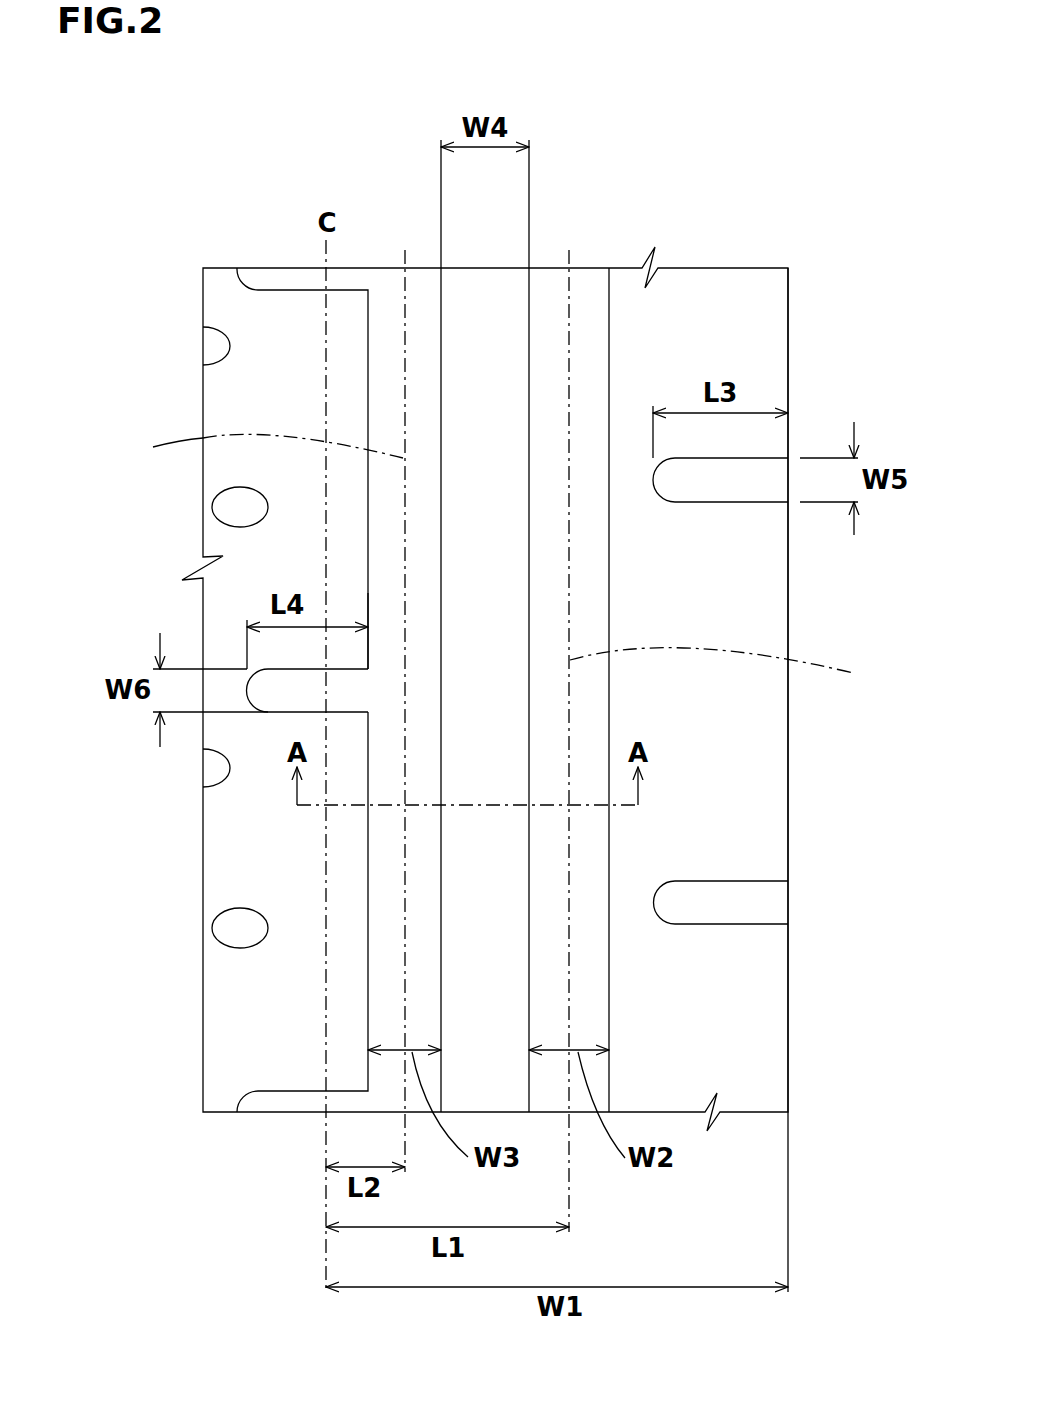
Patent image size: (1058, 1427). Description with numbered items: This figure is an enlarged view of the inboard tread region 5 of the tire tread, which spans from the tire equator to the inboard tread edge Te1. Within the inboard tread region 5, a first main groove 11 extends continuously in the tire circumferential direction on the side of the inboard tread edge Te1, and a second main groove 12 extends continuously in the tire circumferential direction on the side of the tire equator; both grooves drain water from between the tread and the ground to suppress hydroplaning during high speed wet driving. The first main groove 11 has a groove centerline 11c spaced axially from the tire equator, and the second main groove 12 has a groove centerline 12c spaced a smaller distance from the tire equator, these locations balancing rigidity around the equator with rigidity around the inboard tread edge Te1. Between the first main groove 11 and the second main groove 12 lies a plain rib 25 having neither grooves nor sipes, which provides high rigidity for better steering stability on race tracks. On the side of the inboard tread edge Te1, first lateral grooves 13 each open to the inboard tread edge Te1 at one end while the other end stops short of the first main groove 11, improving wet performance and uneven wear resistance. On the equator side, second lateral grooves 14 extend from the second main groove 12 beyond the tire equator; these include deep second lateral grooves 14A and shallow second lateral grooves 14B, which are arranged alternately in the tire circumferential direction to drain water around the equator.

The inboard tread region 5 is at (542, 260).
The first main groove 11 is at (583, 320).
The groove centerline of the first main groove 11c is at (738, 668).
The second main groove 12 is at (391, 325).
The groove centerline of the second main groove 12c is at (252, 447).
The first lateral groove 13 is at (722, 478).
The second lateral groove 14 is at (290, 278).
The deep second lateral groove 14A is at (295, 693).
The shallow second lateral groove 14B is at (293, 1103).
The plain rib 25 is at (483, 320).
The inboard tread edge Te1 is at (790, 320).